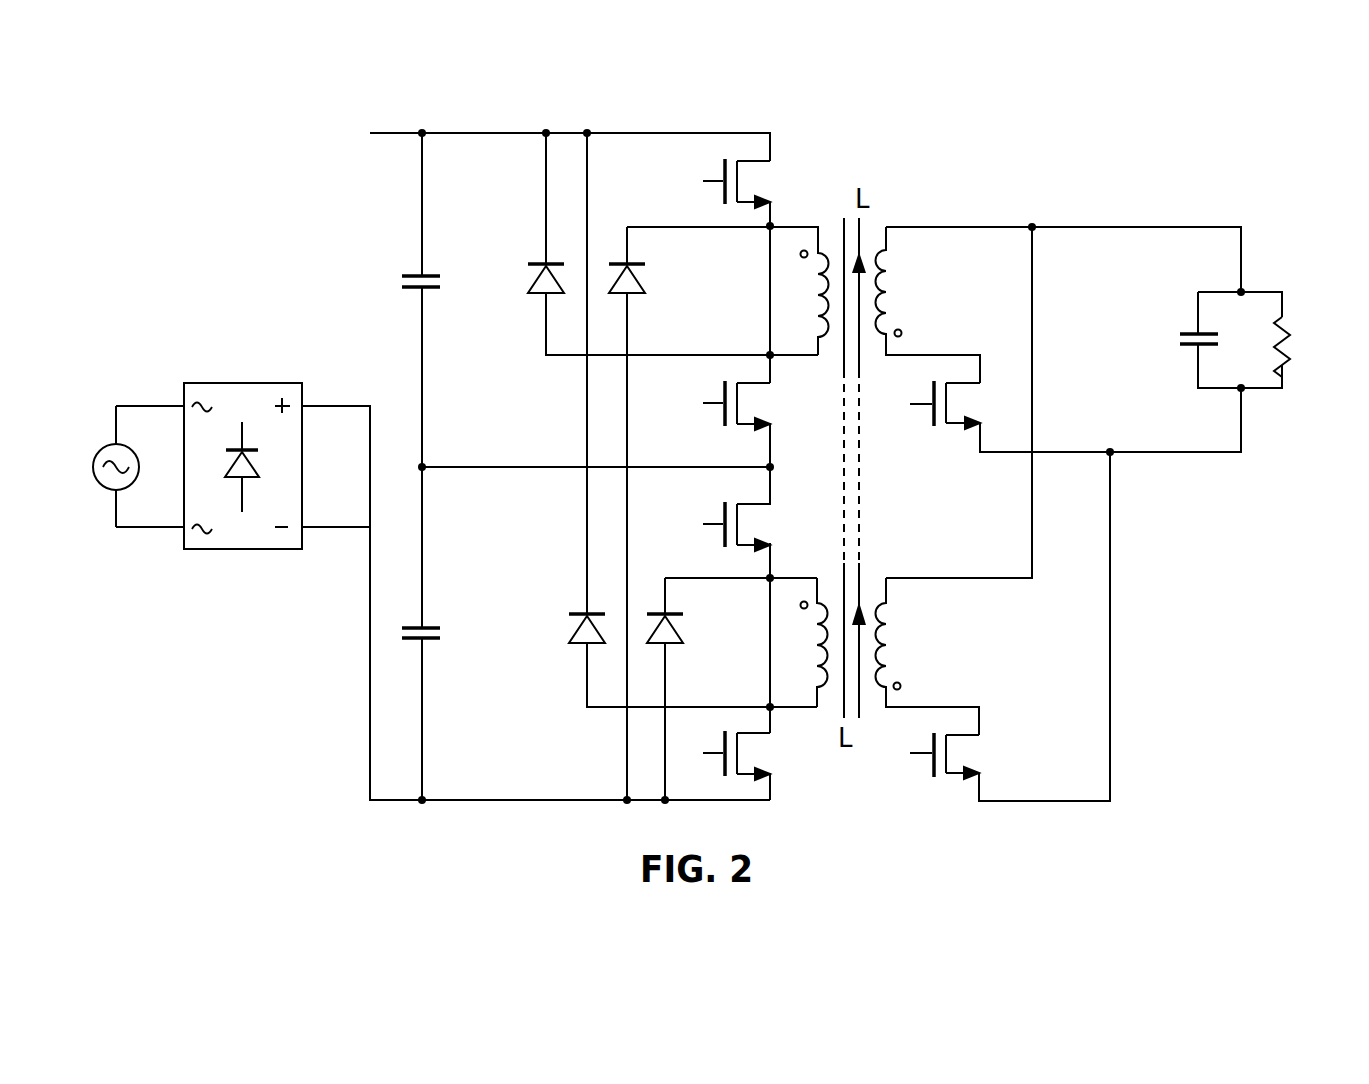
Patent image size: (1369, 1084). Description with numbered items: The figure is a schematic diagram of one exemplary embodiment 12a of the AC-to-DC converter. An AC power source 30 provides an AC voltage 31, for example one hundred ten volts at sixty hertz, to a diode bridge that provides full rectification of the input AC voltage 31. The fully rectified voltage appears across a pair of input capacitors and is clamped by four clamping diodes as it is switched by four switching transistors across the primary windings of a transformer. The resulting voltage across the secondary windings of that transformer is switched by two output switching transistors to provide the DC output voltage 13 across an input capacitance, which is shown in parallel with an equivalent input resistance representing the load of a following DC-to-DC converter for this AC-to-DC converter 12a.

The AC power source 30 is at (108, 490).
The AC voltage 31 is at (155, 383).
The AC-to-DC converter embodiment 12a is at (280, 796).
The DC output voltage 13 is at (1127, 227).